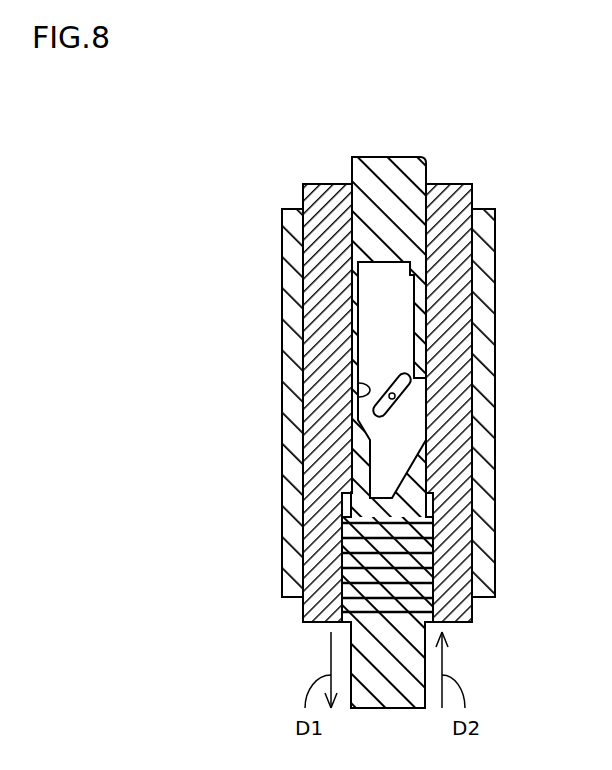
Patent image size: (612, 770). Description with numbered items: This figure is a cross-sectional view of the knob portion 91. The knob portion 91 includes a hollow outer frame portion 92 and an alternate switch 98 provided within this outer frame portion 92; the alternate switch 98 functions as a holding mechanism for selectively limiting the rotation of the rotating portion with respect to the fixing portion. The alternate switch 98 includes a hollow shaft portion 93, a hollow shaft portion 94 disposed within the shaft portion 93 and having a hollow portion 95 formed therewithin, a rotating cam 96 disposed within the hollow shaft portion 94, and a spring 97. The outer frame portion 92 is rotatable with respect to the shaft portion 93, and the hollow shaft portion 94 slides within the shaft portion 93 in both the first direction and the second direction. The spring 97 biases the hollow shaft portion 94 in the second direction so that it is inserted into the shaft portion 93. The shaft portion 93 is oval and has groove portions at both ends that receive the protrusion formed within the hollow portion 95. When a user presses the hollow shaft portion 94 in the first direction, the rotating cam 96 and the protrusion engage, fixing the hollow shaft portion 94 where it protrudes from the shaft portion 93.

The knob portion 91 is at (395, 128).
The outer frame portion 92 is at (283, 317).
The shaft portion 93 is at (327, 367).
The hollow shaft portion 94 is at (368, 458).
The hollow portion 95 is at (360, 400).
The rotating cam 96 is at (404, 402).
The spring 97 is at (433, 612).
The alternate switch 98 is at (226, 347).